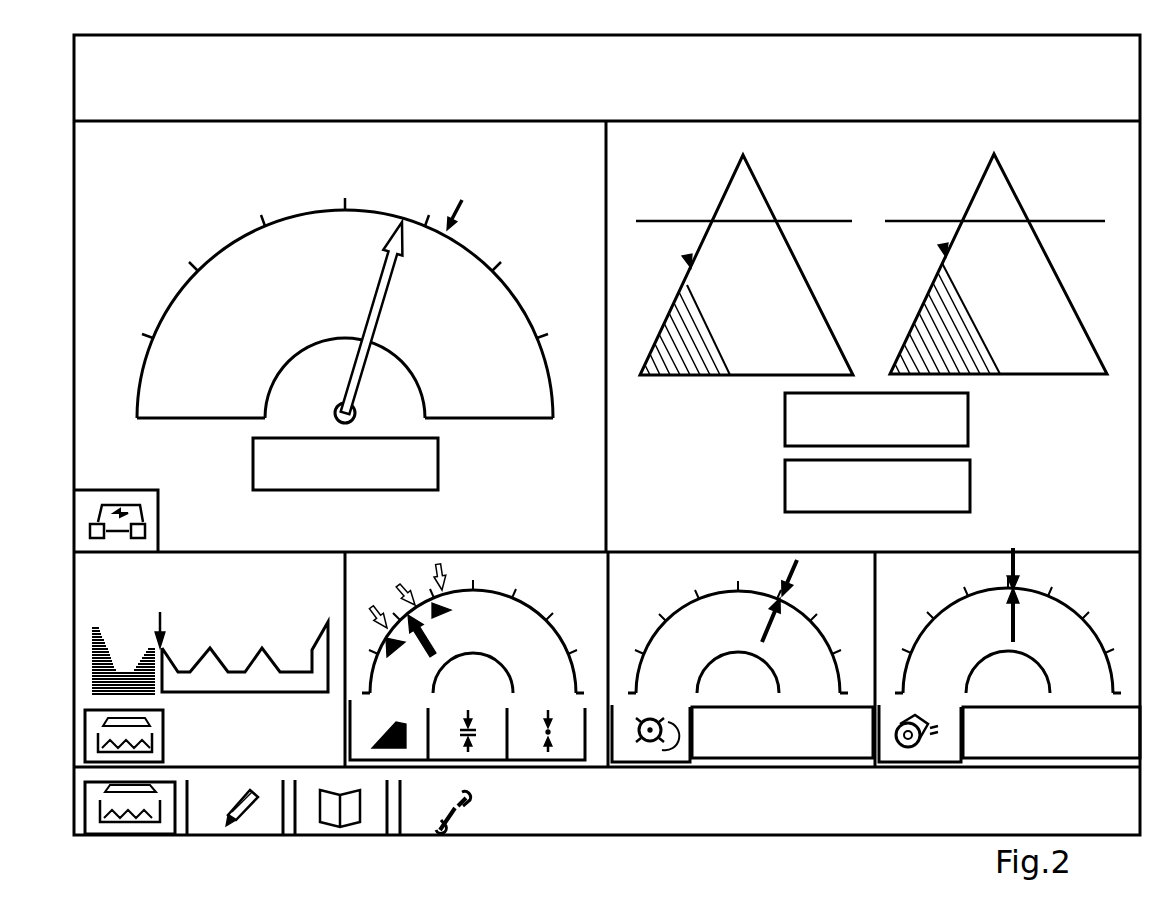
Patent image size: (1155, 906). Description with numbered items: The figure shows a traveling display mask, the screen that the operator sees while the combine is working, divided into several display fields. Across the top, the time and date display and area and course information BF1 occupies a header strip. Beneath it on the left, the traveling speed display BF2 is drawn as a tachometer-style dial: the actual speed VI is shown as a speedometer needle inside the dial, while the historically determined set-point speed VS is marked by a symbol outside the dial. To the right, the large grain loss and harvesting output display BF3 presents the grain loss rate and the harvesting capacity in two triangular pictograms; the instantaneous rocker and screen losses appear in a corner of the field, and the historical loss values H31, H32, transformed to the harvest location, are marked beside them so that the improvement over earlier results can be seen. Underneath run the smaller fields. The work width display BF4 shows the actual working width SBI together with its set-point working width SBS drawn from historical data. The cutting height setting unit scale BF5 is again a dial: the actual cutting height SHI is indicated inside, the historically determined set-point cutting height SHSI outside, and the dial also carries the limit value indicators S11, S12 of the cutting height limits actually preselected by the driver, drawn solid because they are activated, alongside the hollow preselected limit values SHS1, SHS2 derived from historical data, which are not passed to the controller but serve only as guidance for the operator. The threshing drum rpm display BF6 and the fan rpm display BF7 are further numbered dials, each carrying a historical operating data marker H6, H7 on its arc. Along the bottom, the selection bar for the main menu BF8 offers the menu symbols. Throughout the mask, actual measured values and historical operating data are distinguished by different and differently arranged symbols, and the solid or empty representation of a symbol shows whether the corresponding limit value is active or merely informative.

The time and date display and area and course information BF1 is at (388, 112).
The traveling speed display BF2 is at (563, 176).
The grain loss and harvesting output display BF3 is at (651, 174).
The work width display BF4 is at (128, 587).
The cutting height setting unit scale BF5 is at (390, 587).
The threshing drum rpm display BF6 is at (655, 587).
The fan rpm display BF7 is at (922, 587).
The selection bar for the main menu BF8 is at (548, 801).
The actual speed VI is at (405, 206).
The set-point speed VS is at (450, 200).
The historical loss value H31 is at (688, 258).
The historical loss value H32 is at (944, 245).
The historical operating data marker H6 is at (792, 600).
The historical operating data marker H7 is at (1020, 575).
The set-point working width SBS is at (156, 618).
The actual working width SBI is at (164, 692).
The preselected limit value SHS1 is at (370, 607).
The set-point cutting height SHSI is at (398, 585).
The preselected limit value SHS2 is at (485, 528).
The actual cutting height SHI is at (430, 657).
The limit value indicator S11 is at (388, 652).
The limit value indicator S12 is at (452, 612).